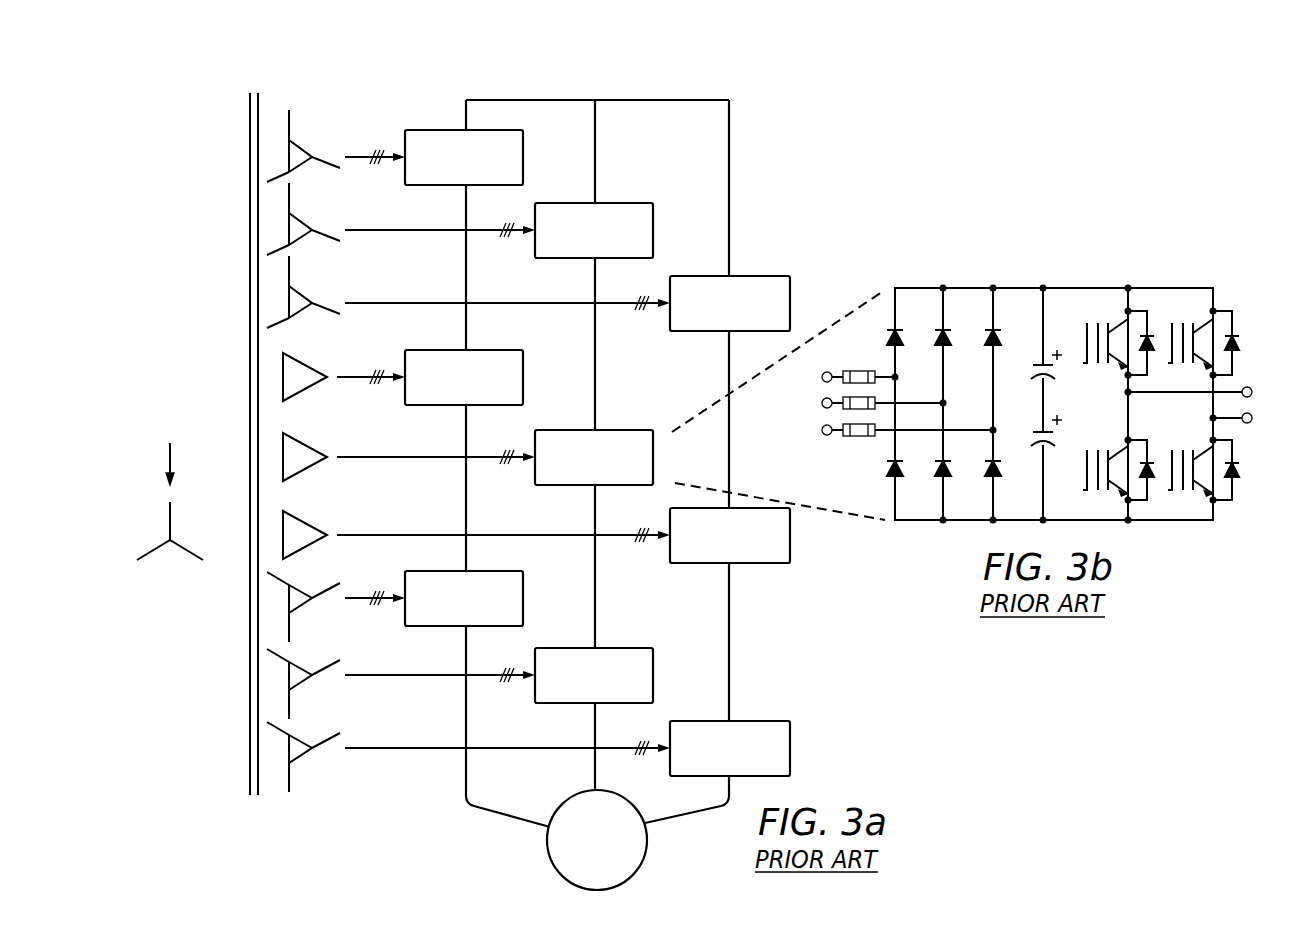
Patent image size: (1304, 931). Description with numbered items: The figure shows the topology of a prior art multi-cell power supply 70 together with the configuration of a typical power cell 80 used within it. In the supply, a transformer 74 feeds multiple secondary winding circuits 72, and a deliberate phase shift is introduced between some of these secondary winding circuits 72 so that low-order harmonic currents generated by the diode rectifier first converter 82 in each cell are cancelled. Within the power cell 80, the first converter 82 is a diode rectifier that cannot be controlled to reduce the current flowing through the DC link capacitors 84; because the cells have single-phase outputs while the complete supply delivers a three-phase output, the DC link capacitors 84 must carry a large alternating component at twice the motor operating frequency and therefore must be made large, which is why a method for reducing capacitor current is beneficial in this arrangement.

In FIG. 3a, the multi-cell power supply 70 is at (336, 849).
In FIG. 3a, the secondary winding circuits 72 is at (277, 108).
In FIG. 3a, the transformer 74 is at (108, 355).
In FIG. 3b, the power cell 80 is at (1141, 239).
In FIG. 3b, the first converter 82 is at (888, 275).
In FIG. 3b, the DC link capacitors 84 is at (1023, 275).